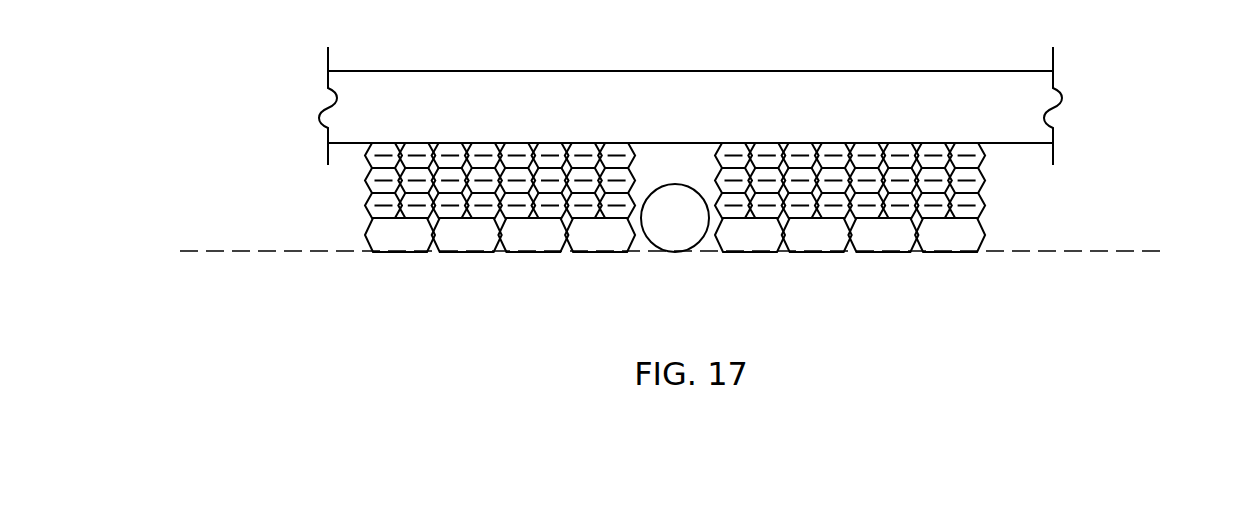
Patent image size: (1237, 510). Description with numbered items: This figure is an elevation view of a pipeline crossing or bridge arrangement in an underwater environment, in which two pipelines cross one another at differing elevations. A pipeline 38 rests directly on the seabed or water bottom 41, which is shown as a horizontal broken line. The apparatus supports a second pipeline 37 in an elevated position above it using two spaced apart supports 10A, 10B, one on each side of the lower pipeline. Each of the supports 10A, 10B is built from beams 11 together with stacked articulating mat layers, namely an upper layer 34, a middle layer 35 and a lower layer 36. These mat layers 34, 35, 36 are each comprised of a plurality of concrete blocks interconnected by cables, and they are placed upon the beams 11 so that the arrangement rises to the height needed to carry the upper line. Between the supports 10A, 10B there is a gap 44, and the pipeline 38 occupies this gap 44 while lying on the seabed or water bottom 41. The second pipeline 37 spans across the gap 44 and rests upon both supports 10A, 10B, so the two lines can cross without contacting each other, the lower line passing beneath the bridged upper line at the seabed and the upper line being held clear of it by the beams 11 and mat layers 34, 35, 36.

The second pipeline 37 is at (518, 70).
The upper layer 34 is at (365, 156).
The middle layer 35 is at (365, 181).
The lower layer 36 is at (365, 207).
The beam 11 is at (415, 252).
The pipeline 38 is at (703, 186).
The gap 44 is at (709, 262).
The seabed or water bottom 41 is at (223, 241).
The support 10A is at (387, 268).
The support 10B is at (1011, 190).